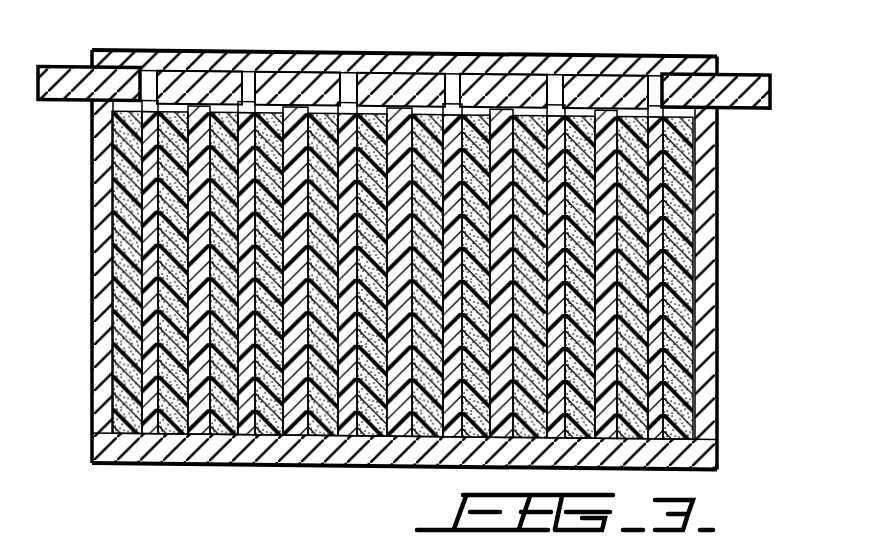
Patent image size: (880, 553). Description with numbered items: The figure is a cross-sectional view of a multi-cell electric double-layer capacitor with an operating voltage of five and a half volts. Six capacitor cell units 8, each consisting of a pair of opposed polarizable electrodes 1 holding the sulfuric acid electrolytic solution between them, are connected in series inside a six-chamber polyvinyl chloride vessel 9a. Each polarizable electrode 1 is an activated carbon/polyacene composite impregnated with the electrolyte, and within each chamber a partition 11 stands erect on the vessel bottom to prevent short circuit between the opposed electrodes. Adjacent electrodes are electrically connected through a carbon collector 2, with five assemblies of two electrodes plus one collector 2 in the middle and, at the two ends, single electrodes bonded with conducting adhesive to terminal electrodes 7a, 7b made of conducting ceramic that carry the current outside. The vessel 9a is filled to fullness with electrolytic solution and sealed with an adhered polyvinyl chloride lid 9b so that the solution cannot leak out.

The polarizable electrode 1 is at (408, 269).
The collector 2 is at (513, 73).
The terminal electrode 7a is at (80, 75).
The terminal electrode 7b is at (747, 75).
The capacitor cell unit 8 is at (205, 477).
The vessel 9a is at (157, 450).
The lid 9b is at (297, 50).
The partition 11 is at (675, 378).